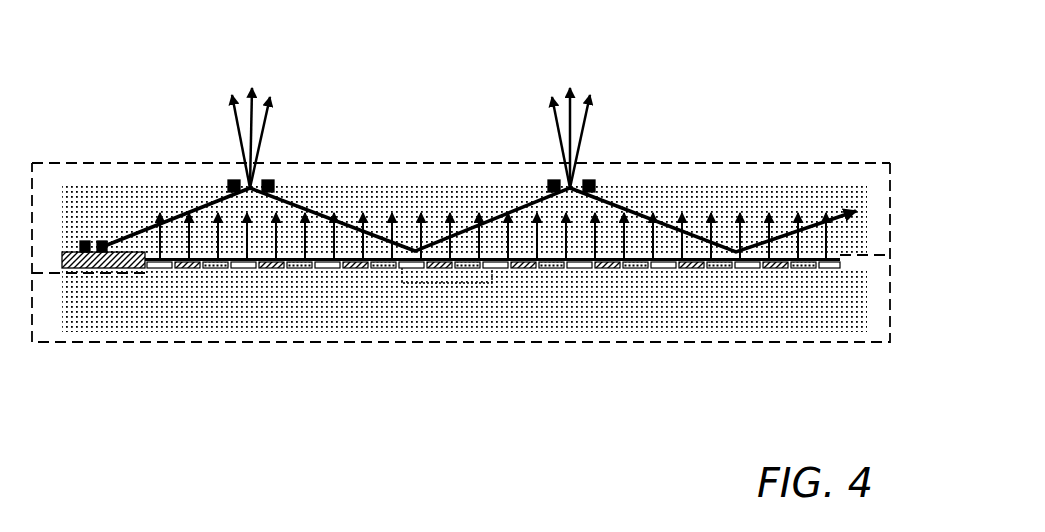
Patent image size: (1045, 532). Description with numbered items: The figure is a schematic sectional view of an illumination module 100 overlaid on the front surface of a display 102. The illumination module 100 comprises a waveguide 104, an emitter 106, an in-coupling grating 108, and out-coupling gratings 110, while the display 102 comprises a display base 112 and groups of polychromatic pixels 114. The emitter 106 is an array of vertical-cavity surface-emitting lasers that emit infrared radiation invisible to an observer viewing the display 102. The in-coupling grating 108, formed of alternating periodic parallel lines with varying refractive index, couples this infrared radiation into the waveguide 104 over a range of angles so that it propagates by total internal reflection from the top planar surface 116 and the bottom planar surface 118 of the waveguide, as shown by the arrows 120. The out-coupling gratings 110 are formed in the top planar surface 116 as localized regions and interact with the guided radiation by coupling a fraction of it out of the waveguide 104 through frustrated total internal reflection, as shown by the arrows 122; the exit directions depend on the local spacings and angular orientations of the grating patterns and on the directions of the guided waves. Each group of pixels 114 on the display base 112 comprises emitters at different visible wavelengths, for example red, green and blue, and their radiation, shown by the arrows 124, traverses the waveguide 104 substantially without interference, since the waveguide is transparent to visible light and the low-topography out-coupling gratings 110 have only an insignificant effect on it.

The illumination module 100 is at (753, 163).
The display 102 is at (840, 343).
The waveguide 104 is at (860, 233).
The emitter 106 is at (97, 270).
The in-coupling grating 108 is at (95, 243).
The out-coupling gratings 110 is at (273, 182).
The display base 112 is at (558, 315).
The groups of polychromatic pixels 114 is at (418, 283).
The top planar surface 116 is at (707, 190).
The bottom planar surface 118 is at (855, 252).
The arrows 120 is at (643, 207).
The arrows 122 is at (274, 77).
The arrows 124 is at (450, 258).